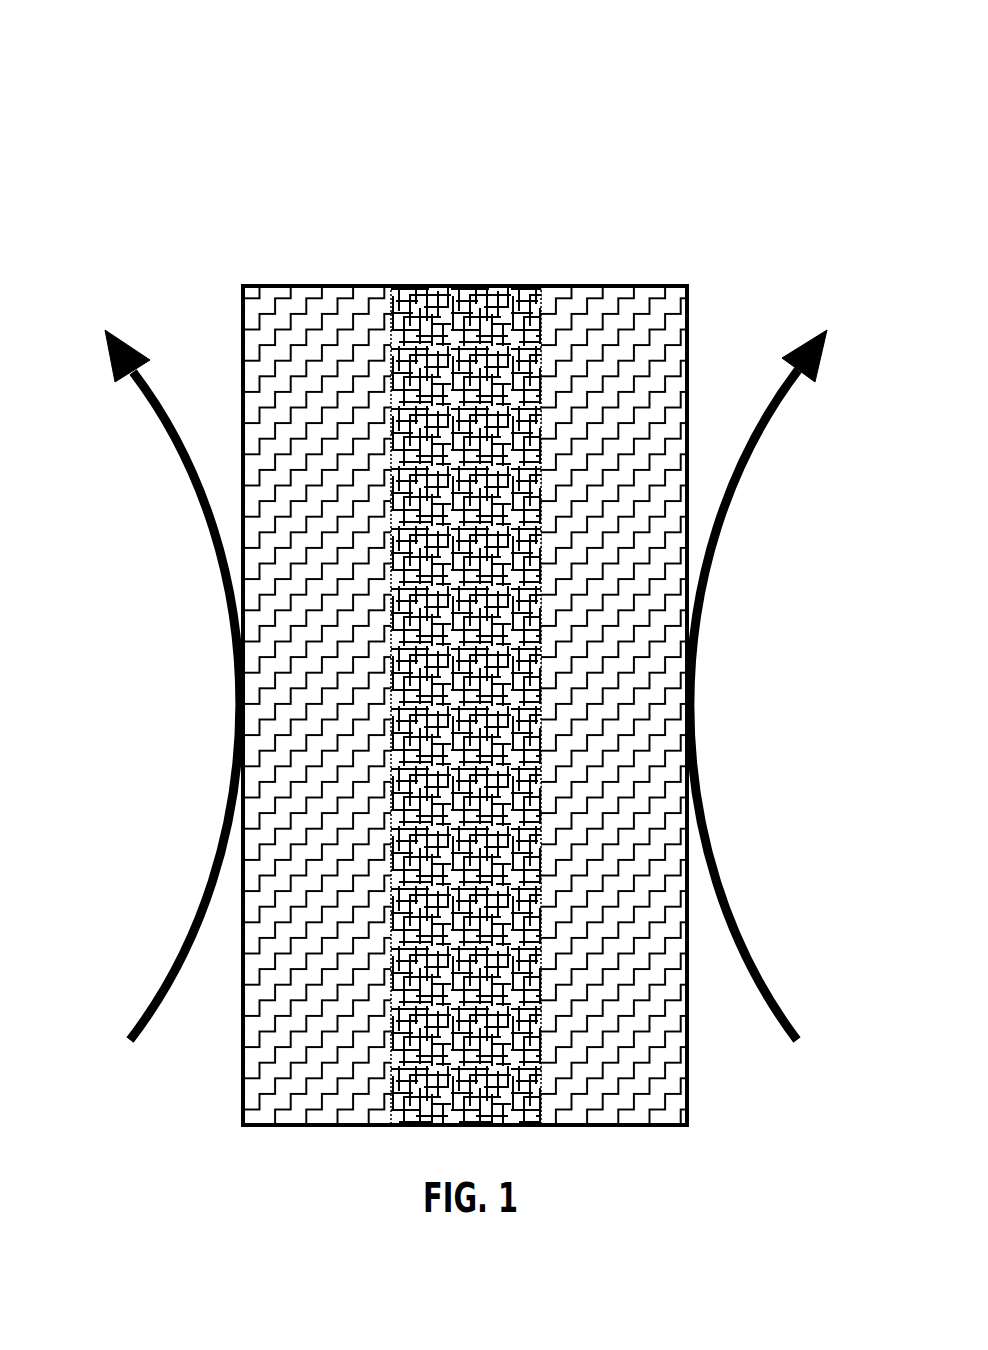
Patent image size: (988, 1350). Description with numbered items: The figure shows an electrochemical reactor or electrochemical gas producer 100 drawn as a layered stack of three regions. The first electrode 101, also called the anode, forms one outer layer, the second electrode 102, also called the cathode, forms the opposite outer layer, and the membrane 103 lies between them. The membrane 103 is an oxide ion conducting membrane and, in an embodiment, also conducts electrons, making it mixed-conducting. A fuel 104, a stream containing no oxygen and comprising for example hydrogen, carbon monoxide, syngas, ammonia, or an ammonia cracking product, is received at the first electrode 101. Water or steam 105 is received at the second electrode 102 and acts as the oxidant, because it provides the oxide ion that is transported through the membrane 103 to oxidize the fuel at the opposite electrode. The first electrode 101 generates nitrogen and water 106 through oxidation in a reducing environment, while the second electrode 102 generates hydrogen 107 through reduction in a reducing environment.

The electrochemical gas producer 100 is at (688, 210).
The first electrode 101 is at (305, 323).
The second electrode 102 is at (620, 320).
The membrane 103 is at (455, 323).
The fuel 104 is at (146, 731).
The water 105 is at (781, 735).
The nitrogen and water 106 is at (91, 325).
The hydrogen 107 is at (840, 334).